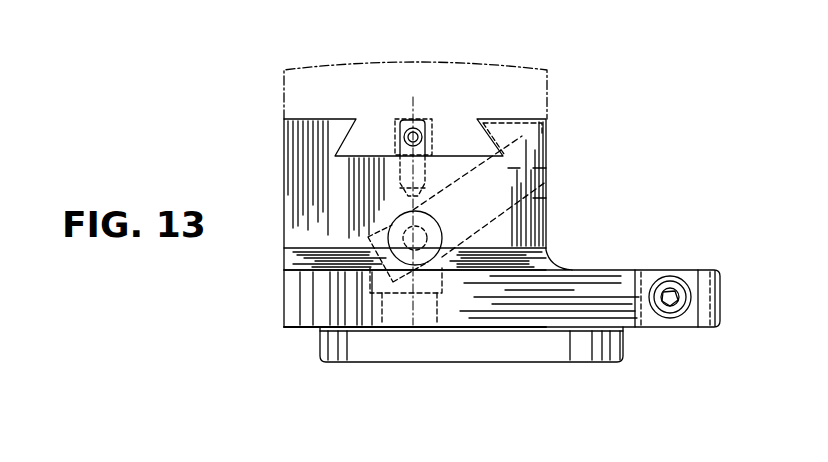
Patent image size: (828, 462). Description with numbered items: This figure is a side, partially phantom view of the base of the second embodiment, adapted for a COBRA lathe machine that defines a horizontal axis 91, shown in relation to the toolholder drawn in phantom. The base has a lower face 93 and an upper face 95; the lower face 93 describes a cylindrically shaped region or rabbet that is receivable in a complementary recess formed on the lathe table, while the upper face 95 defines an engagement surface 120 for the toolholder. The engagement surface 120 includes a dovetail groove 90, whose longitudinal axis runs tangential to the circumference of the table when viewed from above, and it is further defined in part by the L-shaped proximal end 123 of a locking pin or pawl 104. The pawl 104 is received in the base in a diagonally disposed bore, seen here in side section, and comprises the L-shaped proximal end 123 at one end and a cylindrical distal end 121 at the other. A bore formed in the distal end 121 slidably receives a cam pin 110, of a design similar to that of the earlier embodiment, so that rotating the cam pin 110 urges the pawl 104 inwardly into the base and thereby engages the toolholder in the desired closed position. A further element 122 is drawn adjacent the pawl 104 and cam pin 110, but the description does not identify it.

The engagement surface 120 is at (324, 122).
The dovetail groove 90 is at (356, 137).
The horizontal axis 91 is at (414, 130).
The proximal end 123 is at (523, 133).
The locking pin or pawl 104 is at (470, 172).
The ball 122 is at (430, 231).
The cam pin 110 is at (406, 238).
The distal end 121 is at (447, 252).
The upper face 95 is at (600, 270).
The lower face 93 is at (558, 362).